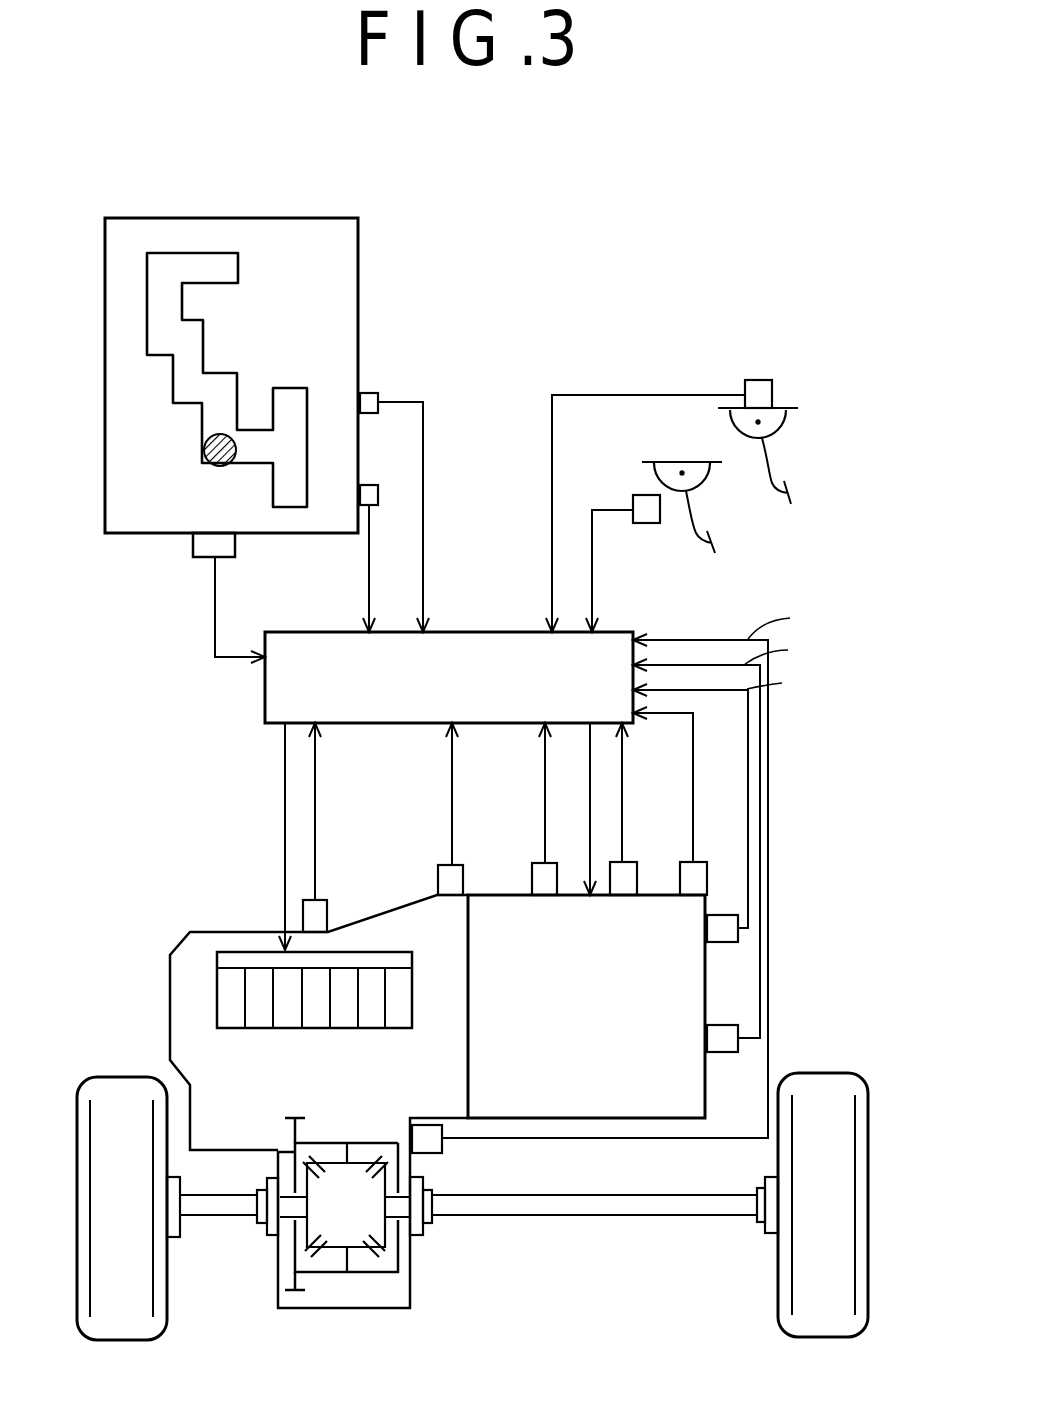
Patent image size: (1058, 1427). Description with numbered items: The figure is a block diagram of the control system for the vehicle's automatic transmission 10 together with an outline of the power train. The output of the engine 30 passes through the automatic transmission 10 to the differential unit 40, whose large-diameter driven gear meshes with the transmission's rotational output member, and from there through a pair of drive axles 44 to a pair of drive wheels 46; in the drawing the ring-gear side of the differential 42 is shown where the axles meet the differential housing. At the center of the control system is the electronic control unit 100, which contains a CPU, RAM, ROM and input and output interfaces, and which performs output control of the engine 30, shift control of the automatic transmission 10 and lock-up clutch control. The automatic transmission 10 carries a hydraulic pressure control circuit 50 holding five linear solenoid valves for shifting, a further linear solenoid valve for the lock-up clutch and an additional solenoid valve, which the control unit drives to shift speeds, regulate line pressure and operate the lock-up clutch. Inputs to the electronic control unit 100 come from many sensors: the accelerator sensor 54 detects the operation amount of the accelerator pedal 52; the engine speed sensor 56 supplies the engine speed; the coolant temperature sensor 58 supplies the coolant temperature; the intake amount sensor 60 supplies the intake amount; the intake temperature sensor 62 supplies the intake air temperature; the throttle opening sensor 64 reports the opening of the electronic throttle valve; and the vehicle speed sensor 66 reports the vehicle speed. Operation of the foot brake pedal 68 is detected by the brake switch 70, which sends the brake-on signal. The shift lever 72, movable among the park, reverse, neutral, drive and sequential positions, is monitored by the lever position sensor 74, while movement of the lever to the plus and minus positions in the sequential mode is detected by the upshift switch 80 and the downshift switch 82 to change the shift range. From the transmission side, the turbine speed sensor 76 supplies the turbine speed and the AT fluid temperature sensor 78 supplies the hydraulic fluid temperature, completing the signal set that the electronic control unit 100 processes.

The automatic transmission 10 is at (188, 1008).
The engine 30 is at (497, 908).
The differential unit 40 is at (388, 1287).
The ring gear 42 is at (298, 1291).
The drive axles 44 is at (223, 1213).
The drive wheels 46 is at (120, 1087).
The hydraulic pressure control circuit 50 is at (217, 958).
The accelerator pedal 52 is at (792, 495).
The accelerator sensor 54 is at (758, 390).
The engine speed sensor 56 is at (722, 942).
The coolant temperature sensor 58 is at (532, 884).
The intake amount sensor 60 is at (722, 1052).
The intake temperature sensor 62 is at (630, 884).
The throttle opening sensor 64 is at (698, 886).
The vehicle speed sensor 66 is at (440, 1152).
The brake pedal 68 is at (715, 547).
The brake switch 70 is at (645, 524).
The shift lever 72 is at (216, 468).
The lever position sensor 74 is at (208, 556).
The turbine speed sensor 76 is at (438, 886).
The AT fluid temperature sensor 78 is at (324, 918).
The upshift switch 80 is at (367, 395).
The downshift switch 82 is at (366, 492).
The electronic control unit 100 is at (468, 632).